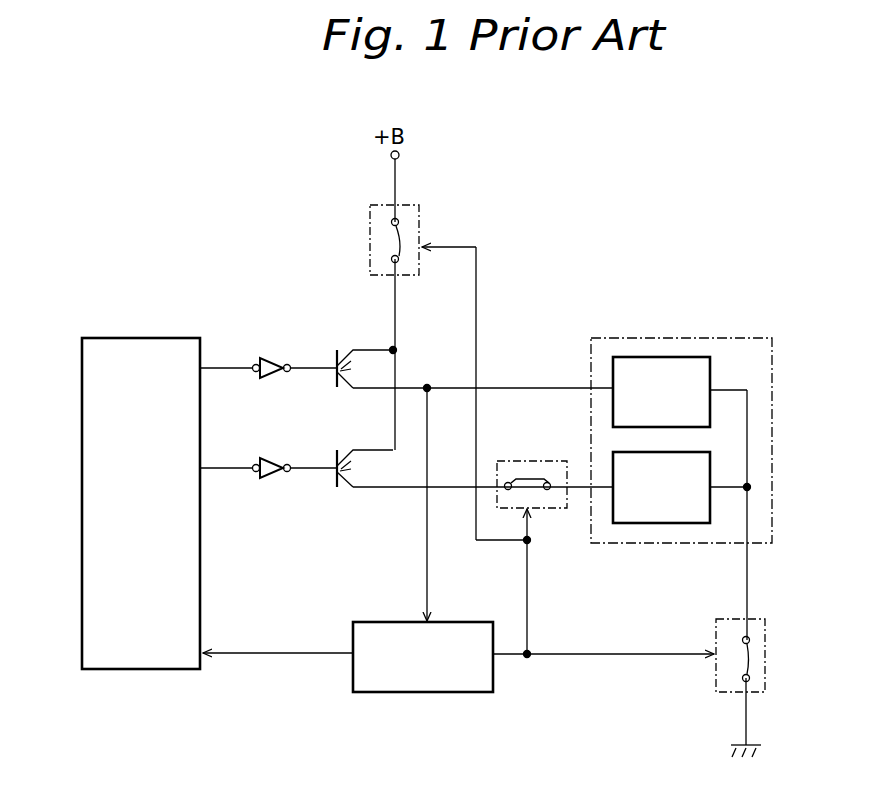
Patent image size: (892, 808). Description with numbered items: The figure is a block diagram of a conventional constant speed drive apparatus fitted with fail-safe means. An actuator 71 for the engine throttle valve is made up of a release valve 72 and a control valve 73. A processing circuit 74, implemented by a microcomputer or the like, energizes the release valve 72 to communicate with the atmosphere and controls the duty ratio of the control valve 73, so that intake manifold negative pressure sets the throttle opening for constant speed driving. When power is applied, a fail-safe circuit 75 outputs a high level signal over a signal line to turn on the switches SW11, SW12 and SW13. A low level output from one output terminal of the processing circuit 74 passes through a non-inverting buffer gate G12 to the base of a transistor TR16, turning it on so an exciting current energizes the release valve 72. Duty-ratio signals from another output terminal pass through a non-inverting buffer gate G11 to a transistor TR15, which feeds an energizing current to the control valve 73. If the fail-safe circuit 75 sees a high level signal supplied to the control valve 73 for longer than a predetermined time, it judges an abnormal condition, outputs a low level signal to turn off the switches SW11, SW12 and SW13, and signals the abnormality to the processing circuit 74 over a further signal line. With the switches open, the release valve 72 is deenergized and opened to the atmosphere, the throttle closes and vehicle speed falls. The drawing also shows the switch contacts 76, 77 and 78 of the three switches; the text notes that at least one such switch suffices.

The processing circuit 74 is at (128, 357).
The non-inverting buffer gate G11 is at (268, 356).
The non-inverting buffer gate G12 is at (262, 480).
The transistor TR15 is at (338, 352).
The transistor TR16 is at (335, 452).
The switch SW11 is at (412, 216).
The switch contact of SW11 76 is at (414, 262).
The switch SW12 is at (557, 510).
The switch contact of SW12 77 is at (531, 477).
The switch SW13 is at (716, 638).
The switch contact of SW13 78 is at (751, 660).
The actuator 71 is at (677, 337).
The release valve 72 is at (695, 466).
The control valve 73 is at (701, 366).
The fail-safe circuit 75 is at (428, 693).